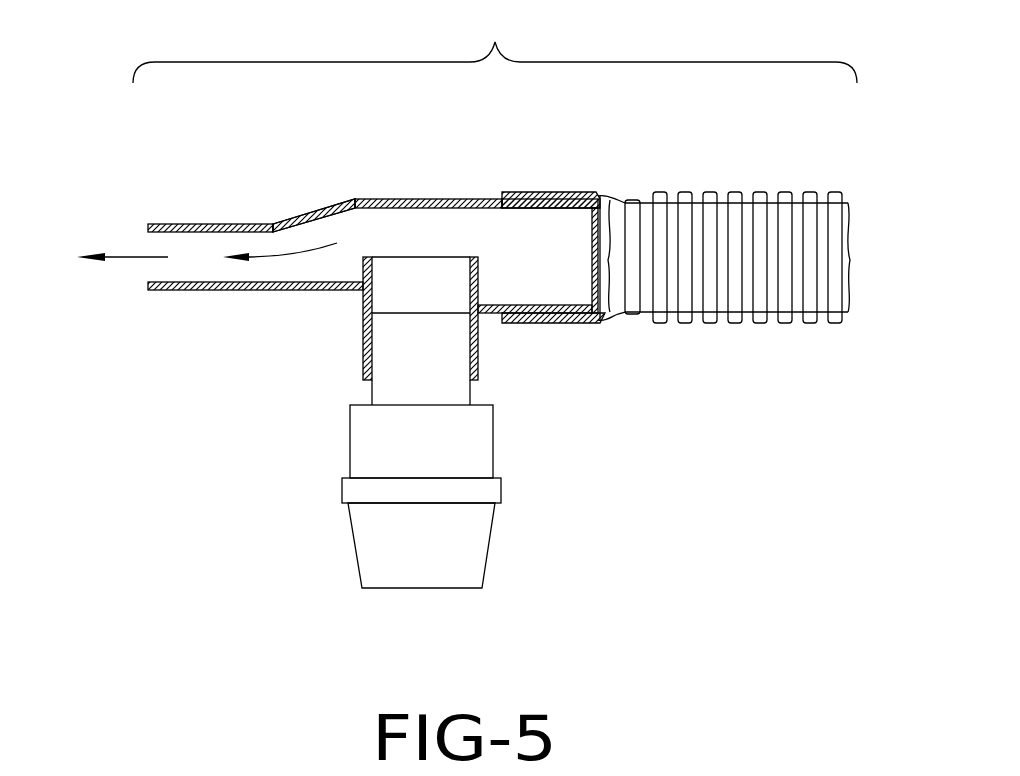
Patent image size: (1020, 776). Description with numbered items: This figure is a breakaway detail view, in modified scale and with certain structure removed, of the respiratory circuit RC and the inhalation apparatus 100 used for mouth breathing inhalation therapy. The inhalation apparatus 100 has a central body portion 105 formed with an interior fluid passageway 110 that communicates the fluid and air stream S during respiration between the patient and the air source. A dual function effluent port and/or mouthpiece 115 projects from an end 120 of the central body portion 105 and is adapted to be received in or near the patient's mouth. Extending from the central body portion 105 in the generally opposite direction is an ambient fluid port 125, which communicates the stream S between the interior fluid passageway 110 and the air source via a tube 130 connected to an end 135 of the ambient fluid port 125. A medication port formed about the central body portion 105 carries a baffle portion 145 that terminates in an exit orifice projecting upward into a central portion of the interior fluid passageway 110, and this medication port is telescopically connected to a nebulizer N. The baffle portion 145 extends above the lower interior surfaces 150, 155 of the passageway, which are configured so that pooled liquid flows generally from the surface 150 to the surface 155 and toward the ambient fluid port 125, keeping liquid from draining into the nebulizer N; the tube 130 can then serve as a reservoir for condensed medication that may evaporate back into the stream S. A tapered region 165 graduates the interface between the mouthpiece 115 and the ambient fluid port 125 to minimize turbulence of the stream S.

The inhalation apparatus 100 is at (452, 190).
The central body portion 105 is at (398, 201).
The interior fluid passageway 110 is at (353, 232).
The dual function effluent port and/or mouthpiece 115 is at (173, 289).
The end of the central body 120 is at (225, 289).
The ambient fluid port 125 is at (547, 204).
The tube 130 is at (710, 192).
The end of the ambient fluid port 135 is at (593, 278).
The baffle portion 145 is at (480, 265).
The interior surface 150 is at (350, 282).
The interior surface 155 is at (493, 307).
The tapered region 165 is at (298, 250).
The fluid and air stream S is at (132, 254).
The nebulizer N is at (501, 495).
The respiratory circuit RC is at (495, 48).